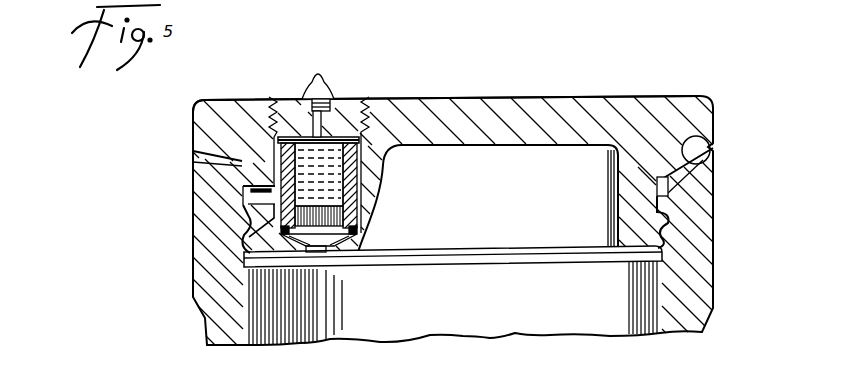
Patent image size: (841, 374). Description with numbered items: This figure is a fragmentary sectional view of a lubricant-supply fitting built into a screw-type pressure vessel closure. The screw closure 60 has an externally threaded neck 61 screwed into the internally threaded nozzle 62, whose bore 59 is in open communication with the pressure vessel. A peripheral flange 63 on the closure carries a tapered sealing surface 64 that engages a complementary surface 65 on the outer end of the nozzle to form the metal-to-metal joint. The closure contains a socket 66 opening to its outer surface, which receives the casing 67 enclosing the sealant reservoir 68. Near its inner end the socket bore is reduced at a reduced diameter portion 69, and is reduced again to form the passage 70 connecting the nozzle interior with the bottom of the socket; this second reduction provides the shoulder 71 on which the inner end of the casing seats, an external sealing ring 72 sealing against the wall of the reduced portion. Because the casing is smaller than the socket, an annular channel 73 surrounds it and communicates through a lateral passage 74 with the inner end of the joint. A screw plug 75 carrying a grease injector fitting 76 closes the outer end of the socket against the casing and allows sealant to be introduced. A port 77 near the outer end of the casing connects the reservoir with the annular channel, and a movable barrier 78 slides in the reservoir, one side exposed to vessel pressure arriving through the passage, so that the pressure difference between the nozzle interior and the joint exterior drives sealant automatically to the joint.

The bore 59 is at (660, 297).
The screw closure 60 is at (236, 107).
The externally threaded neck 61 is at (248, 214).
The nozzle 62 is at (210, 243).
The peripheral flange 63 is at (243, 153).
The tapered sealing surface 64 is at (703, 134).
The complementary surface 65 is at (243, 186).
The socket 66 is at (365, 187).
The casing 67 is at (366, 166).
The sealant reservoir 68 is at (339, 147).
The reduced diameter portion 69 is at (358, 222).
The passage 70 is at (328, 258).
The shoulder 71 is at (353, 245).
The external sealing ring 72 is at (280, 232).
The annular channel 73 is at (225, 126).
The lateral passage 74 is at (251, 199).
The screw plug 75 is at (297, 110).
The grease injector fitting 76 is at (318, 72).
The port 77 is at (266, 134).
The movable barrier 78 is at (350, 205).